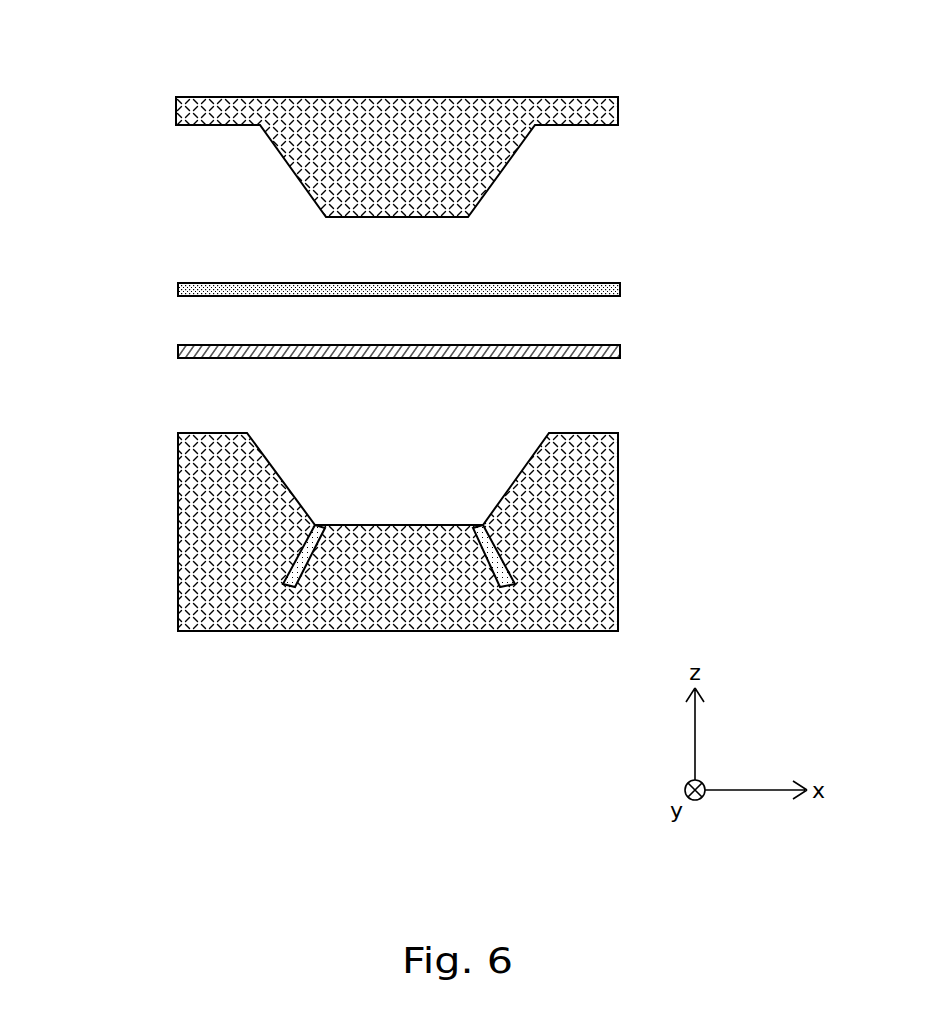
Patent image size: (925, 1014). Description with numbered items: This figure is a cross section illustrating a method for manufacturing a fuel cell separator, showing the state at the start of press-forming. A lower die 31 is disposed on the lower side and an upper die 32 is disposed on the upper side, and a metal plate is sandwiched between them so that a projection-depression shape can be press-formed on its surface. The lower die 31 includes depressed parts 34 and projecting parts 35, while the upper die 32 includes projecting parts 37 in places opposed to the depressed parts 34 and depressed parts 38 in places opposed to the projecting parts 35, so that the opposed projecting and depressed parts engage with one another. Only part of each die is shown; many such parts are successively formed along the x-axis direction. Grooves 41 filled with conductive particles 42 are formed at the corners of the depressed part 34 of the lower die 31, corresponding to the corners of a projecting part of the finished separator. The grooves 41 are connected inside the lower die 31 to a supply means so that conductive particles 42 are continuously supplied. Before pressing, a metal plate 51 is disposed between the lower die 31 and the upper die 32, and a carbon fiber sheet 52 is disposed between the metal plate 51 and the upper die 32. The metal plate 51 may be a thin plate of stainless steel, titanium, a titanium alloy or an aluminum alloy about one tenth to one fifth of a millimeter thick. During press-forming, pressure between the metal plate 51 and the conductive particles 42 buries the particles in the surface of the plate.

The die 31 is at (399, 549).
The die 32 is at (618, 108).
The depressed part 34 is at (408, 480).
The projecting part 35 is at (185, 450).
The projecting part 37 is at (473, 200).
The depressed part 38 is at (220, 156).
The groove 41 is at (323, 520).
The conductive particles 42 is at (307, 565).
The metal plate 51 is at (608, 345).
The carbon fiber sheet 52 is at (610, 283).